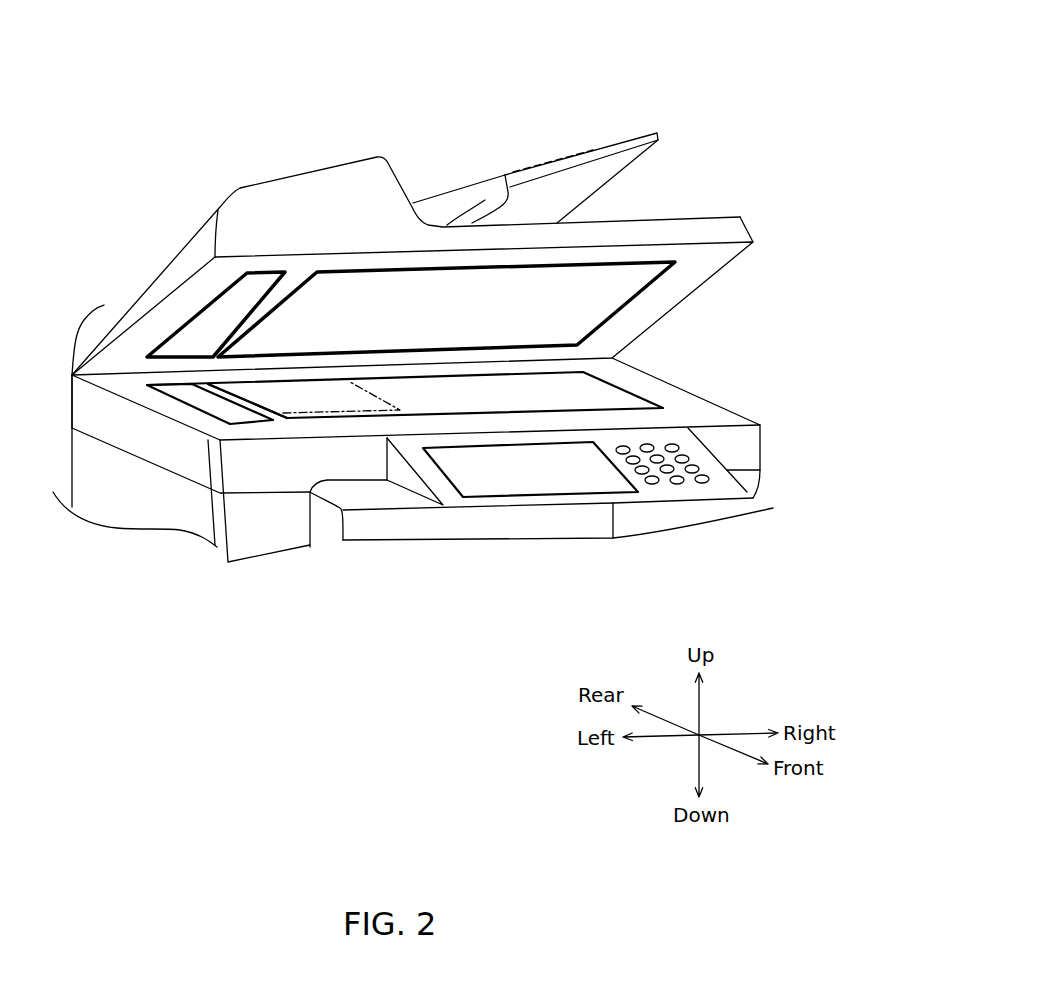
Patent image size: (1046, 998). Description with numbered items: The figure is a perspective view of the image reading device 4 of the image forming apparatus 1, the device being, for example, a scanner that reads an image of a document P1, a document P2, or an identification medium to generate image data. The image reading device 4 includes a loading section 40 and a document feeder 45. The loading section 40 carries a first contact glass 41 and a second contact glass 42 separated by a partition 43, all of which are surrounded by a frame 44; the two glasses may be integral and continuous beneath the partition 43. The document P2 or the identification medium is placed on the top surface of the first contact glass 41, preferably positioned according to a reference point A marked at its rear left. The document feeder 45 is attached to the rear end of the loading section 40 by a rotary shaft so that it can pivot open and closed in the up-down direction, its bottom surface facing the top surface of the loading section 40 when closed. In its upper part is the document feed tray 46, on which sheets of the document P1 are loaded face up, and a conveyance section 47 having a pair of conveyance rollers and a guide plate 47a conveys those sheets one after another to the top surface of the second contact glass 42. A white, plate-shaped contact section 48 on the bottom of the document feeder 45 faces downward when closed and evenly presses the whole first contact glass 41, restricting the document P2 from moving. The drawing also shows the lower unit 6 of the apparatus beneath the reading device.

The image forming apparatus 1 is at (668, 85).
The image reading device 4 is at (778, 285).
The image forming unit 6 is at (587, 513).
The loading section 40 is at (692, 372).
The first contact glass 41 is at (608, 397).
The second contact glass 42 is at (180, 395).
The partition 43 is at (240, 408).
The frame 44 is at (713, 418).
The document feeder 45 is at (745, 207).
The document feed tray 46 is at (618, 143).
The conveyance section 47 is at (327, 195).
The guide plate 47a is at (220, 306).
The contact section 48 is at (457, 302).
The reference point A is at (177, 395).
The document P1 is at (553, 160).
The document P2 is at (347, 413).